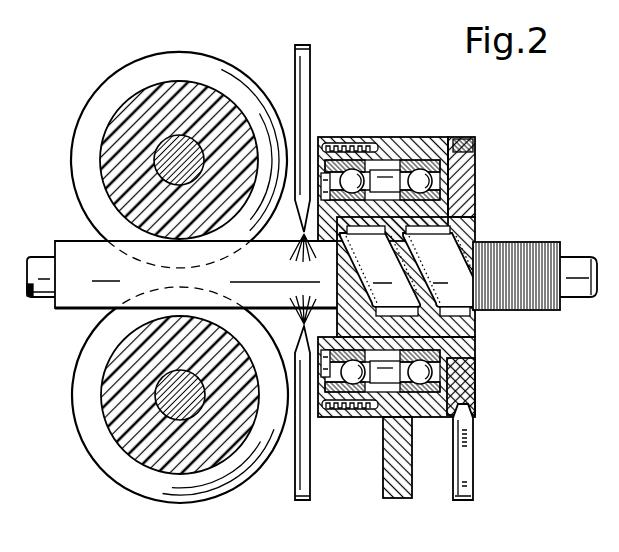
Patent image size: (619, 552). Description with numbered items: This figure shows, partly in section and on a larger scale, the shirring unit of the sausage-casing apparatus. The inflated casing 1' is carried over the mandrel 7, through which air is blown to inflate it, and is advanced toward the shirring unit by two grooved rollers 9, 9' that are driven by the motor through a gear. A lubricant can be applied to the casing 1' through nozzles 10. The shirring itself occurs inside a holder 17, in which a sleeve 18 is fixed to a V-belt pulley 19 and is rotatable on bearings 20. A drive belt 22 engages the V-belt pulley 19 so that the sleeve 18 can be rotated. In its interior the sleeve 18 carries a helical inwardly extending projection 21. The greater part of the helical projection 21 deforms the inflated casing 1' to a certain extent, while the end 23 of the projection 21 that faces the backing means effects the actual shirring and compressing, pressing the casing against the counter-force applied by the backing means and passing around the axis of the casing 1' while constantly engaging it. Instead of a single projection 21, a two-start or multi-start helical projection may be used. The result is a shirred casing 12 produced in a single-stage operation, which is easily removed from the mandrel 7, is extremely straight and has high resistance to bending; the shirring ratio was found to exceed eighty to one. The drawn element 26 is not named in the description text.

The inflated casing 1' is at (181, 251).
The mandrel 7 is at (42, 298).
The grooved roller 9' is at (165, 160).
The grooved roller 9 is at (169, 395).
The nozzle 10 is at (310, 57).
The shirred casing 12 is at (553, 312).
The holder 17 is at (401, 147).
The sleeve 18 is at (478, 330).
The V-belt pulley 19 is at (468, 386).
The bearing 20 is at (457, 178).
The helical projection 21 is at (472, 238).
The drive belt 22 is at (468, 490).
The end of the projection 23 is at (478, 247).
The helical thread lobes 26 is at (416, 270).